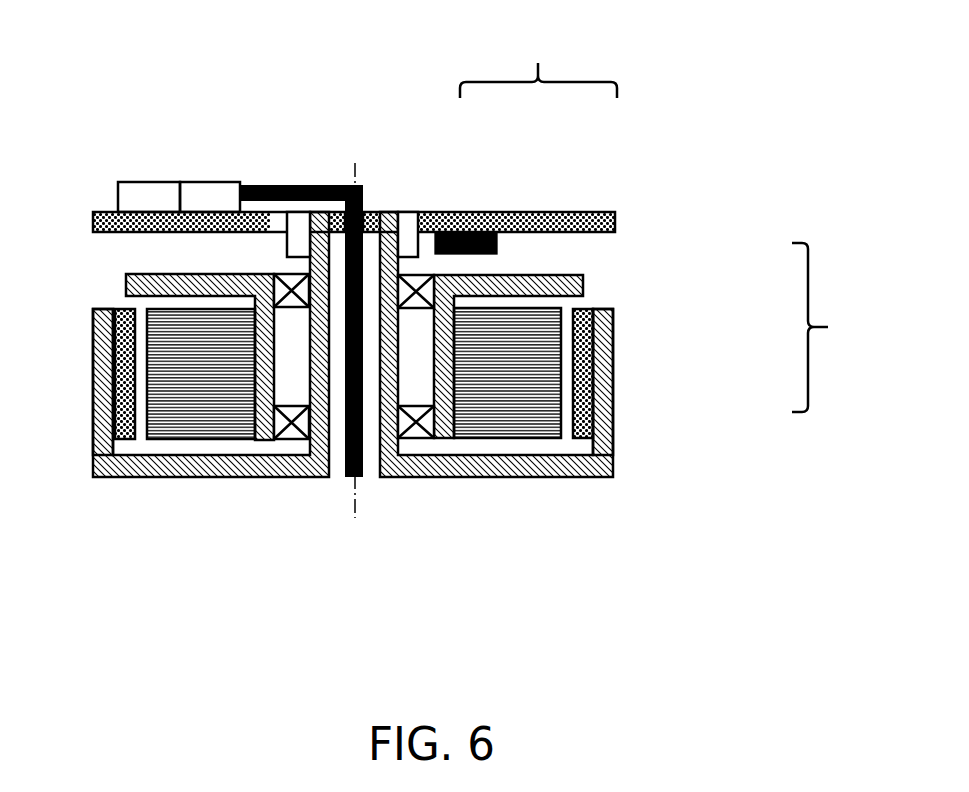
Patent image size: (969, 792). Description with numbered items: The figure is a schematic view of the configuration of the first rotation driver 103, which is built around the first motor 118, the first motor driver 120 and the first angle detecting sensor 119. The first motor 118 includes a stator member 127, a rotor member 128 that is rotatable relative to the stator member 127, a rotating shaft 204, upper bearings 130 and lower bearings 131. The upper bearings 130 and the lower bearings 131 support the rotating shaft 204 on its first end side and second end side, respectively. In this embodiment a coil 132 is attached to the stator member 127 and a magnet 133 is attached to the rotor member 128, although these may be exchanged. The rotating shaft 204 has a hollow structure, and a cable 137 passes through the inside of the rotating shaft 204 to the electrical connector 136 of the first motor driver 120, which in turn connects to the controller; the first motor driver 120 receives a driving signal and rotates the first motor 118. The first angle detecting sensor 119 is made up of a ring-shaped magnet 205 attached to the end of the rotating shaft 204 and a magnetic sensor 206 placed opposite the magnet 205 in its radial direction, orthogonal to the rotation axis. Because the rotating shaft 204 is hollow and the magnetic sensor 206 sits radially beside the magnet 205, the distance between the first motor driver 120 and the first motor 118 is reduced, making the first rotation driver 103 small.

The first rotation driver 103 is at (463, 337).
The first motor 118 is at (489, 349).
The first angle detecting sensor 119 is at (452, 144).
The first motor driver 120 is at (590, 215).
The stator member 127 is at (558, 285).
The rotor member 128 is at (602, 382).
The upper bearings 130 is at (293, 283).
The lower bearings 131 is at (415, 430).
The coil 132 is at (548, 330).
The magnet 133 is at (580, 423).
The electrical connector 136 is at (152, 198).
The cable 137 is at (217, 197).
The rotating shaft 204 is at (322, 470).
The magnet 205 is at (410, 222).
The magnetic sensor 206 is at (490, 232).